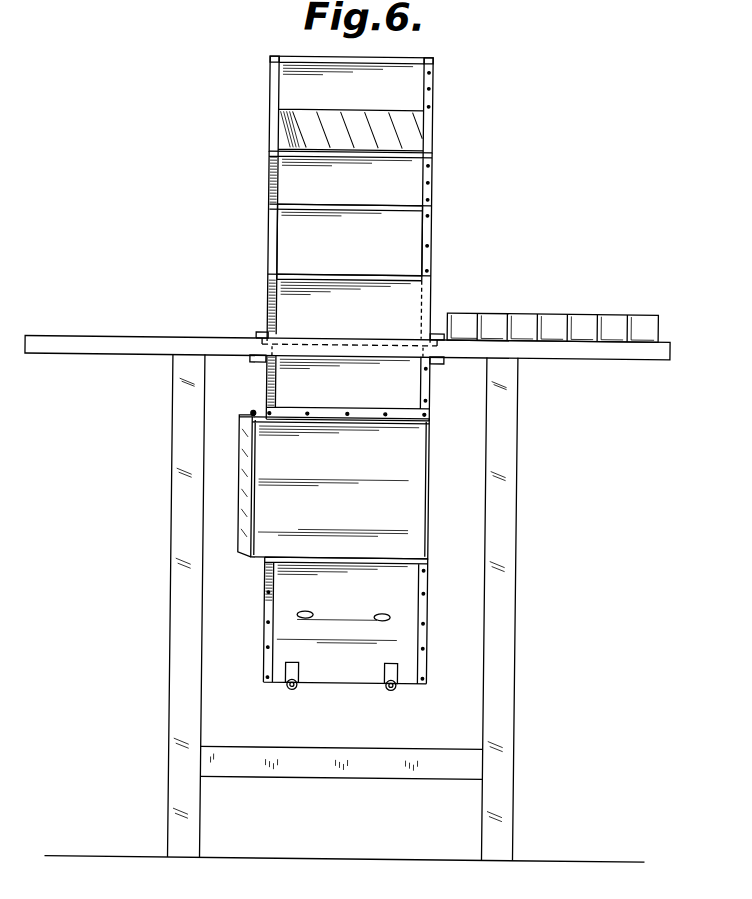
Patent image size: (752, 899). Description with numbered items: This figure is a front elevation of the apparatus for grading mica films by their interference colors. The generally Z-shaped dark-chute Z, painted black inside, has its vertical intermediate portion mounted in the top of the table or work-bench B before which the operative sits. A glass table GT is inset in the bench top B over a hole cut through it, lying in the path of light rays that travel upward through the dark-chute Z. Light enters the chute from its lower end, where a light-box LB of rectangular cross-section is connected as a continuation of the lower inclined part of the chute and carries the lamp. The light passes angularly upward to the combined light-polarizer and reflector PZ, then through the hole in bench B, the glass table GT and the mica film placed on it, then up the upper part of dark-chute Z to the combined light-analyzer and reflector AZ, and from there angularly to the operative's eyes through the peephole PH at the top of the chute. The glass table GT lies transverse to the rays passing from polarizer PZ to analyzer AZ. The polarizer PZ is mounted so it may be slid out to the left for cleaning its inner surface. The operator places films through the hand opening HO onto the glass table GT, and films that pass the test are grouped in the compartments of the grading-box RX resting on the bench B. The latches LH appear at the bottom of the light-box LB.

The peephole PH is at (351, 104).
The combined light-analyzer and reflector AZ is at (413, 137).
The dark-chute Z is at (353, 240).
The hand opening HO is at (410, 283).
The grading-box RX is at (548, 301).
The glass table GT is at (394, 333).
The table or work-bench B is at (68, 340).
The combined light-polarizer and reflector PZ is at (240, 440).
The light-box LB is at (345, 620).
The latches LH is at (363, 680).